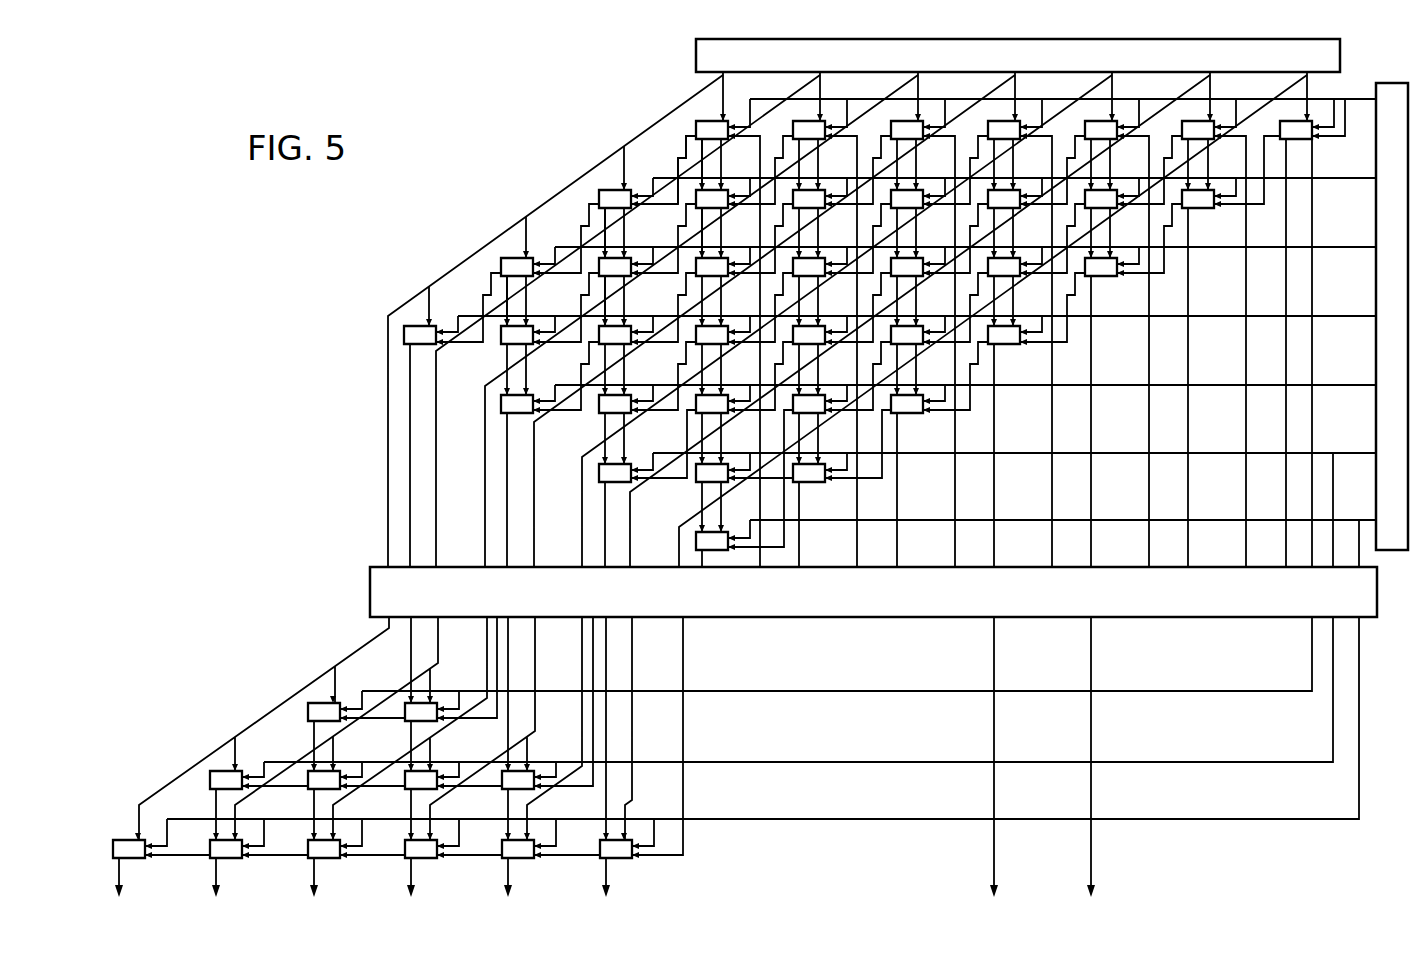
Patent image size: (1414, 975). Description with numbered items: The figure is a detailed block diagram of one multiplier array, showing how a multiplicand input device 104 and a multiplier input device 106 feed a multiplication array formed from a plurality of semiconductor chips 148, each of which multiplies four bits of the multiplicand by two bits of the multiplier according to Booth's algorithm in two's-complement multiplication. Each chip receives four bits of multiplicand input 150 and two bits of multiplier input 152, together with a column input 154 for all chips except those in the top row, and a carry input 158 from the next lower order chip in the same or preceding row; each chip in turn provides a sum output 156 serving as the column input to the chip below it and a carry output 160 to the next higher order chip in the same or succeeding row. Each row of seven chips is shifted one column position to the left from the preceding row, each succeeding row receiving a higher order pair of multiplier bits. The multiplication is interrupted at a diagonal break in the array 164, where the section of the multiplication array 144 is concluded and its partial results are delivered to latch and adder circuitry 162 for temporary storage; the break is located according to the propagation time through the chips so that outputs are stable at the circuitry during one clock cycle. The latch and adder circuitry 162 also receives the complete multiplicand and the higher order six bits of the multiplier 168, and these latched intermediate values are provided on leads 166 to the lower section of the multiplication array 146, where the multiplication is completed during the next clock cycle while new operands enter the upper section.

The multiplicand input device 104 is at (696, 52).
The multiplier input device 106 is at (1376, 222).
The section of the multiplication array 144 is at (500, 216).
The lower section of the multiplication array 146 is at (278, 691).
The semiconductor chips 148 is at (1022, 340).
The multiplicand input 150 is at (605, 240).
The multiplier input 152 is at (500, 318).
The column input 154 is at (702, 153).
The sum output 156 is at (700, 232).
The carry input 158 is at (607, 277).
The carry output 160 is at (700, 208).
The latch and adder circuitry 162 is at (370, 601).
The diagonal break in the array 164 is at (376, 402).
The leads 166 is at (386, 626).
The higher order six bits of the multiplier 168 is at (1359, 538).